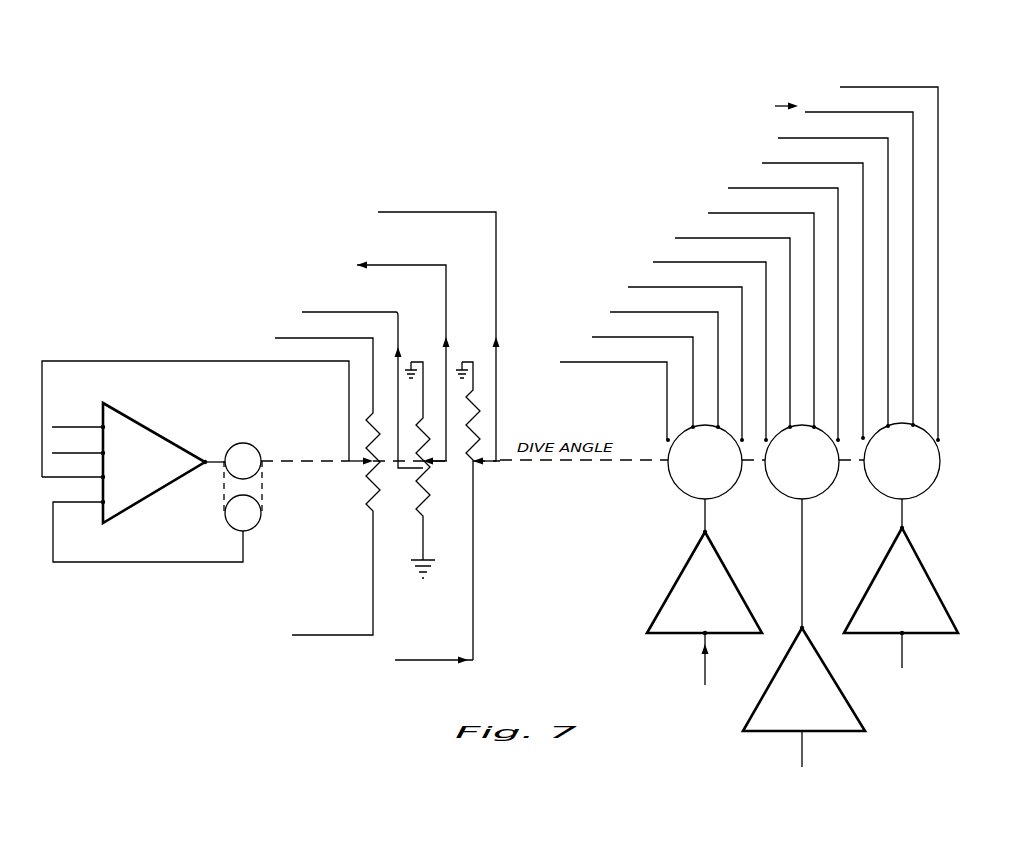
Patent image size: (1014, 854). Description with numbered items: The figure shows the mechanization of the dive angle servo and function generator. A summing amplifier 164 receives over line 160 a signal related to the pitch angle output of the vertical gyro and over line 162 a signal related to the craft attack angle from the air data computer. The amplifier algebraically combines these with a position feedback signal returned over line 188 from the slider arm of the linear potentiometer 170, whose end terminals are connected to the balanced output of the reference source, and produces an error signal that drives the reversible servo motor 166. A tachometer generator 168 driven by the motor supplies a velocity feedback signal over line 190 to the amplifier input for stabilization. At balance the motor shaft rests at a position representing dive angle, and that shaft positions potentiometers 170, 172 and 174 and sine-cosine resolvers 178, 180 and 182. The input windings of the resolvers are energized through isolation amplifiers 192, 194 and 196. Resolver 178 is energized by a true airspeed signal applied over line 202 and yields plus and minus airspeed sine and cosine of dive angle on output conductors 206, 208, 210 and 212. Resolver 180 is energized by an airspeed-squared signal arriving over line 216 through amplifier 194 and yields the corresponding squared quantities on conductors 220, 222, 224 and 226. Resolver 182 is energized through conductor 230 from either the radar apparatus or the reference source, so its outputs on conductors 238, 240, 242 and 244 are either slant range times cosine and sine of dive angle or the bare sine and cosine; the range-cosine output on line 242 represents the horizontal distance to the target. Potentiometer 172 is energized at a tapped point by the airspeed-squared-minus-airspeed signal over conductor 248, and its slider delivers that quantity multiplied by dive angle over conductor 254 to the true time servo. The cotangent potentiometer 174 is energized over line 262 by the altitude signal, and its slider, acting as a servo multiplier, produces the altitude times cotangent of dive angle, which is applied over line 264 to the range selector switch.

The line 160 is at (52, 474).
The line 162 is at (52, 430).
The summing amplifier 164 is at (143, 431).
The servo motor 166 is at (243, 443).
The tachometer generator 168 is at (258, 523).
The linear potentiometer 170 is at (373, 470).
The potentiometer 172 is at (423, 478).
The cotangent potentiometer 174 is at (473, 455).
The resolver 178 is at (682, 483).
The resolver 180 is at (784, 494).
The resolver 182 is at (912, 490).
The line 188 is at (221, 361).
The line 190 is at (138, 562).
The isolation amplifier 192 is at (682, 572).
The isolation amplifier 194 is at (832, 687).
The isolation amplifier 196 is at (927, 577).
The line 202 is at (705, 670).
The output conductor 206 is at (693, 368).
The output conductor 208 is at (742, 393).
The output conductor 210 is at (718, 386).
The output conductor 212 is at (718, 405).
The line 216 is at (802, 745).
The conductor 220 is at (766, 432).
The conductor 222 is at (790, 427).
The conductor 224 is at (839, 470).
The conductor 226 is at (843, 422).
The conductor 230 is at (902, 655).
The conductor 238 is at (863, 208).
The conductor 240 is at (888, 237).
The line 242 is at (913, 265).
The conductor 244 is at (938, 310).
The conductor 248 is at (397, 315).
The conductor 254 is at (407, 266).
The line 262 is at (418, 660).
The line 264 is at (496, 224).